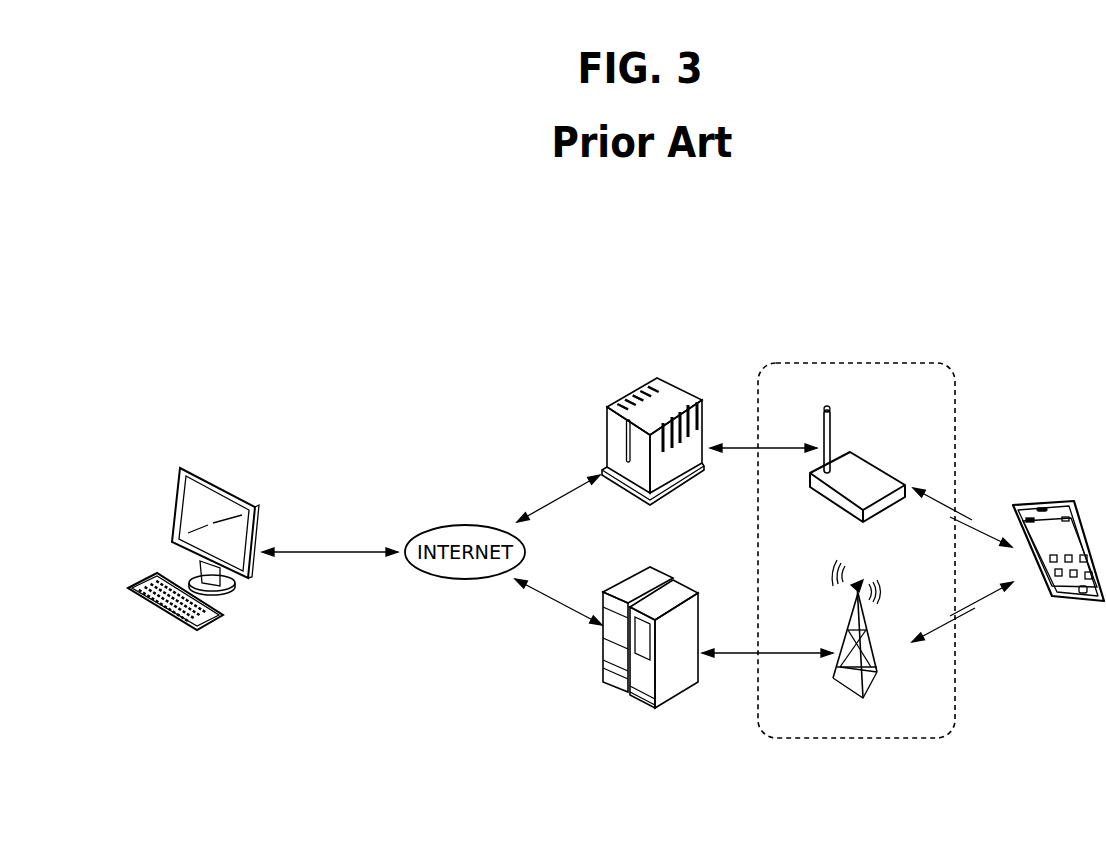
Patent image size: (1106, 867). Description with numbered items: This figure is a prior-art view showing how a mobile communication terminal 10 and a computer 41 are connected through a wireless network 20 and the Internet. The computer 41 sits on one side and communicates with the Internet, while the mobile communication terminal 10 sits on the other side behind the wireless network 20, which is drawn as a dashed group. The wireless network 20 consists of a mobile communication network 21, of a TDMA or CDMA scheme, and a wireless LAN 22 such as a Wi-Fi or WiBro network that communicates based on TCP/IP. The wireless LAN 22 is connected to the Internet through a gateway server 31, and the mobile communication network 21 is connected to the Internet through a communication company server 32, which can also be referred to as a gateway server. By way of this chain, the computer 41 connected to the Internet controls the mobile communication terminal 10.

The mobile communication terminal 10 is at (1037, 507).
The wireless network 20 is at (867, 363).
The mobile communication network 21 is at (845, 640).
The wireless LAN 22 is at (860, 463).
The gateway server 31 is at (673, 392).
The communication company server 32 is at (637, 675).
The computer 41 is at (217, 487).